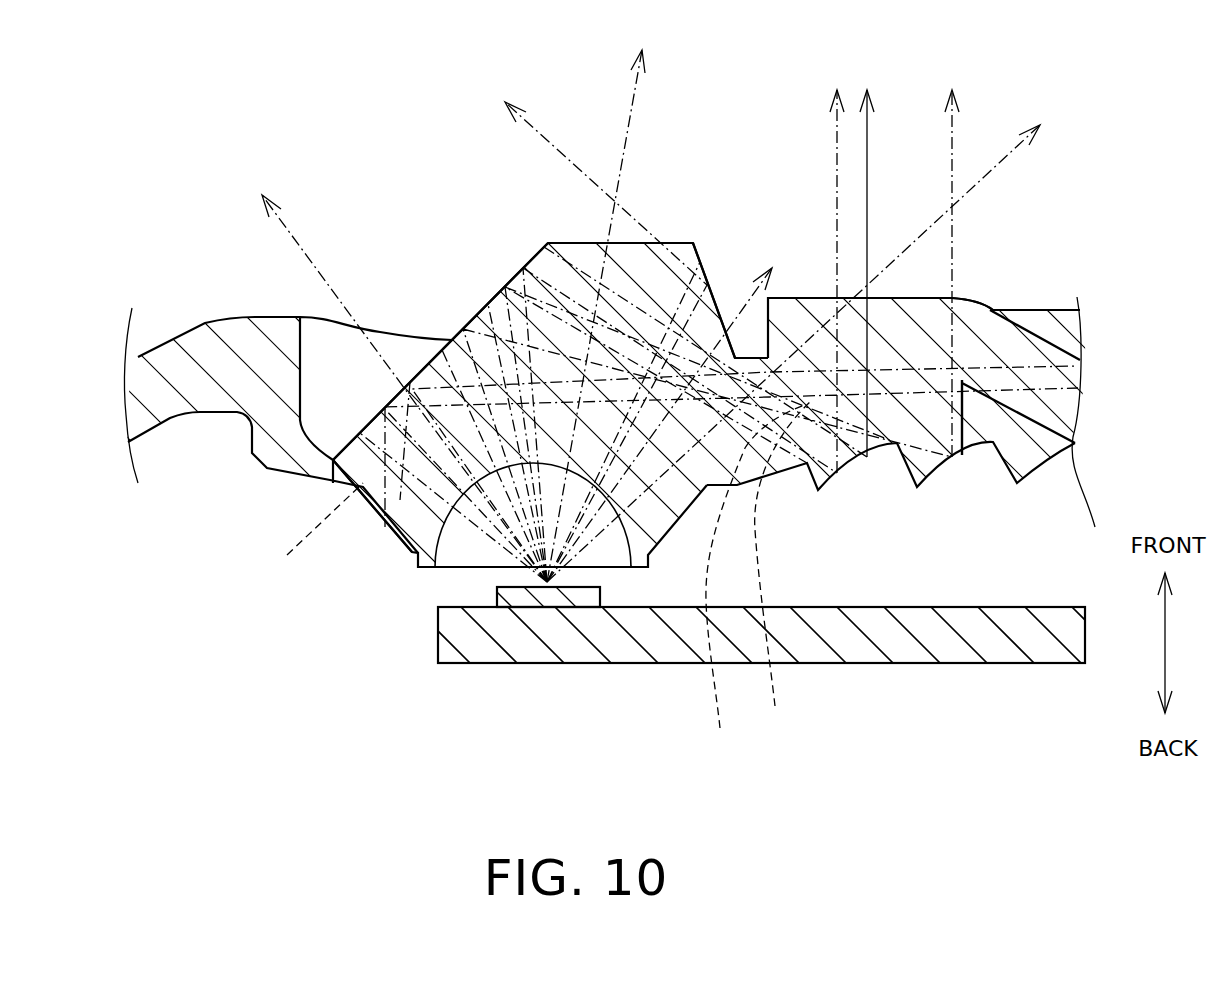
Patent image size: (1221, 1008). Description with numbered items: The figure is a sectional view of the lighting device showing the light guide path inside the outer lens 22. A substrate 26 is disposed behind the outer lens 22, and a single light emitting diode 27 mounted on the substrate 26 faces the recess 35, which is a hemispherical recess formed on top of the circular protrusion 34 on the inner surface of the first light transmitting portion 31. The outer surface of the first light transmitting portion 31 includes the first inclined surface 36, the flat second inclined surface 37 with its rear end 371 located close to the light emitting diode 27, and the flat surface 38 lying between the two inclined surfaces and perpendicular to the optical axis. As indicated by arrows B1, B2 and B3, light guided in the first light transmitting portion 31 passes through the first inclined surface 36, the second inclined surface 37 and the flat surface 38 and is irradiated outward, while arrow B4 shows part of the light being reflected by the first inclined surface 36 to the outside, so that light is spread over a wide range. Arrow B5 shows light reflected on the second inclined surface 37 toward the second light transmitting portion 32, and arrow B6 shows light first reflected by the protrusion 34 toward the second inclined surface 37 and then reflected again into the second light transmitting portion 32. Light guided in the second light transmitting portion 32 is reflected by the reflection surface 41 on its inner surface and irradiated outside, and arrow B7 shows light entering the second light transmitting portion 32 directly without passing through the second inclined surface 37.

The outer lens 22 is at (762, 150).
The substrate 26 is at (656, 648).
The light emitting diode 27 is at (556, 607).
The first light transmitting portion 31 is at (680, 215).
The second light transmitting portion 32 is at (1023, 290).
The protrusion 34 is at (400, 517).
The recess 35 is at (447, 515).
The first inclined surface 36 is at (705, 290).
The second inclined surface 37 is at (492, 299).
The flat surface 38 is at (586, 243).
The reflection surface 41 is at (980, 430).
The rear end of the second inclined surface 371 is at (331, 476).
The arrow B1 is at (737, 292).
The arrow B2 is at (628, 115).
The arrow B3 is at (296, 240).
The arrow B4 is at (558, 135).
The arrow B5 is at (782, 572).
The arrow B6 is at (303, 528).
The arrow B7 is at (753, 583).